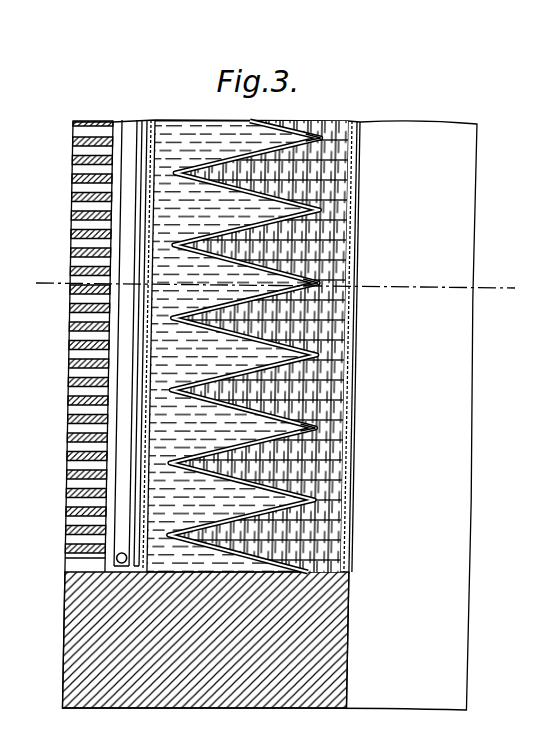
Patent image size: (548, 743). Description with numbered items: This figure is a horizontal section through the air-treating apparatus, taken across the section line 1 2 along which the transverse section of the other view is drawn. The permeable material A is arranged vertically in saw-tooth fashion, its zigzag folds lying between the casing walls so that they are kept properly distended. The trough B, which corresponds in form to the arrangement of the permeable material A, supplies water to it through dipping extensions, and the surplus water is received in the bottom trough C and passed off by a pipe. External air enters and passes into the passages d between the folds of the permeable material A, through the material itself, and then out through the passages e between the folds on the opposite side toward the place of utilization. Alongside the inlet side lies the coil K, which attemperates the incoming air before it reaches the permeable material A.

The section line 1 2 1 is at (148, 283).
The section line 1 2 is at (404, 289).
The permeable material A is at (314, 289).
The trough B is at (247, 346).
The bottom trough C is at (258, 346).
The coil K is at (120, 457).
The passages between the folds d is at (234, 349).
The passages between the folds e is at (244, 346).